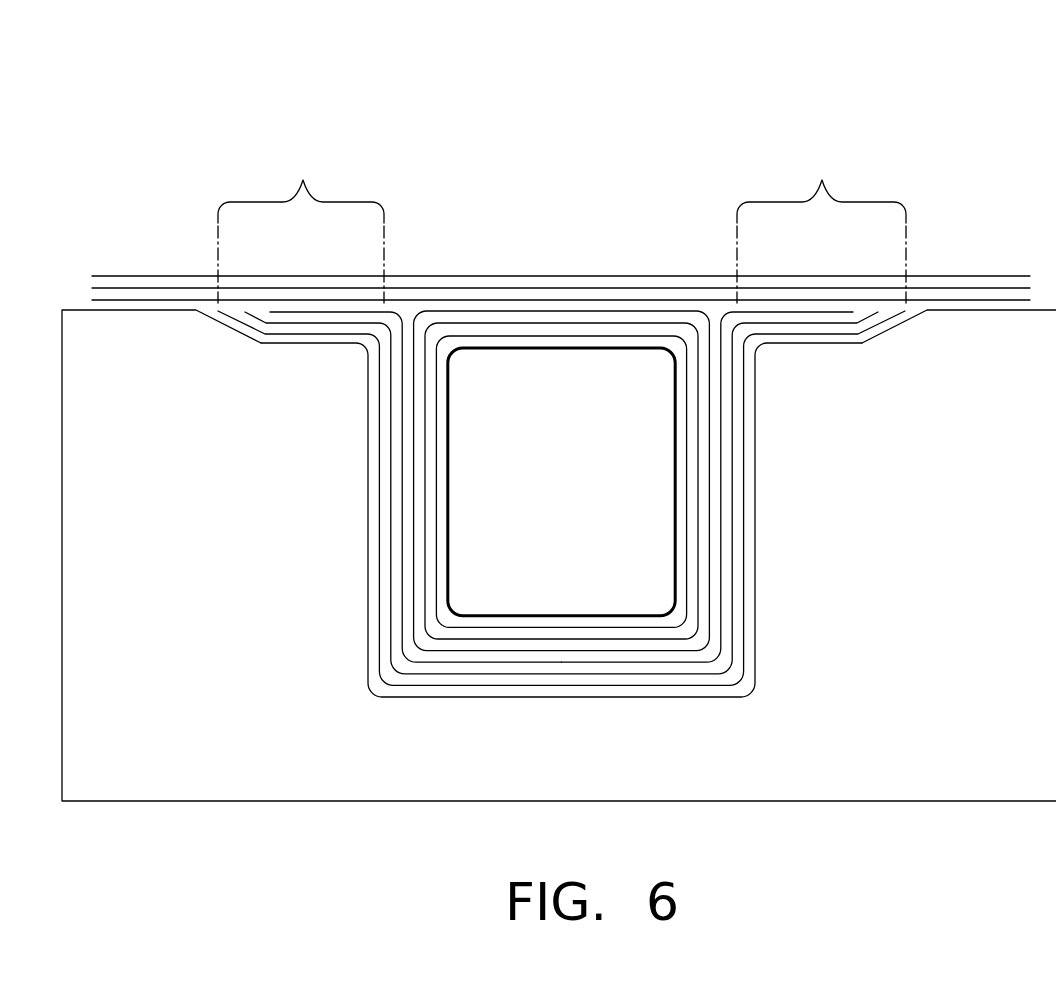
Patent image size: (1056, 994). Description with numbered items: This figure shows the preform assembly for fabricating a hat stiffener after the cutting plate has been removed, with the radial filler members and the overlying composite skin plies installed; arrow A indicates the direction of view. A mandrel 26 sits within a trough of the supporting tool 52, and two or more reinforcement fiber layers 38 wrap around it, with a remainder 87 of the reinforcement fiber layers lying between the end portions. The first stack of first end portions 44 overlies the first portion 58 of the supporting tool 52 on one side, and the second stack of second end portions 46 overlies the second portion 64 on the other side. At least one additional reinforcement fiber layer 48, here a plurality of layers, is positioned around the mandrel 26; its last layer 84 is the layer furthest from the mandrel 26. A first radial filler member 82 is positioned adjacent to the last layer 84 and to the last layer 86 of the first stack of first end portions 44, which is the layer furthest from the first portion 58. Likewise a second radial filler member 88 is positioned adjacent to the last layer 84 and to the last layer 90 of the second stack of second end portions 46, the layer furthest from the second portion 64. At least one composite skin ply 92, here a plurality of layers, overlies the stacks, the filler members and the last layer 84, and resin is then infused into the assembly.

The mandrel 26 is at (676, 518).
The reinforcement fiber layers 38 is at (283, 348).
The first stack of first end portions 44 is at (303, 180).
The second stack of second end portions 46 is at (822, 180).
The additional reinforcement fiber layer 48 is at (538, 306).
The supporting tool 52 is at (942, 572).
The first portion of supporting tool 58 is at (298, 349).
The second portion of supporting tool 64 is at (840, 350).
The first radial filler member 82 is at (408, 305).
The last layer of additional reinforcement fiber layer 84 is at (448, 330).
The last layer of first stack 86 is at (337, 308).
The remainder of reinforcement fiber layers 87 is at (688, 690).
The second radial filler member 88 is at (717, 305).
The last layer of second stack 90 is at (823, 325).
The composite skin ply 92 is at (536, 272).
The view direction A is at (940, 108).